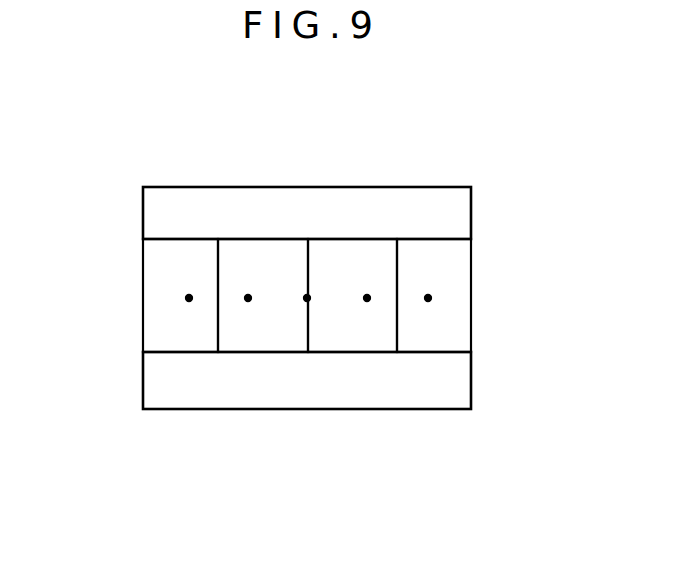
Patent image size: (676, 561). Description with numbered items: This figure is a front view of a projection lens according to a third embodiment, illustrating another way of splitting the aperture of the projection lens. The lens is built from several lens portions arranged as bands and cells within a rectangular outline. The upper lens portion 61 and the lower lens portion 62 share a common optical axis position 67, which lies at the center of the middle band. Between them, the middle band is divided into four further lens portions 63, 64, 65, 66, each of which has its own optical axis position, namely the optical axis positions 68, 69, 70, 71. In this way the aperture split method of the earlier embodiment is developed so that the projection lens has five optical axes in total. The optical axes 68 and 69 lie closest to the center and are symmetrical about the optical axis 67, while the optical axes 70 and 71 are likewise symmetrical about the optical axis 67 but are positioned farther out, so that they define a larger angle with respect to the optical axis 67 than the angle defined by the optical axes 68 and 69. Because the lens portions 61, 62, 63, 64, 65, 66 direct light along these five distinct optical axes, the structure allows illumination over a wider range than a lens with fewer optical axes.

The lens portion 61 is at (458, 225).
The lens portion 62 is at (458, 380).
The lens portion 63 is at (267, 342).
The lens portion 64 is at (368, 342).
The lens portion 65 is at (157, 322).
The lens portion 66 is at (458, 327).
The optical axis position 67 is at (307, 298).
The optical axis position 68 is at (248, 298).
The optical axis position 69 is at (367, 298).
The optical axis position 70 is at (189, 298).
The optical axis position 71 is at (428, 298).